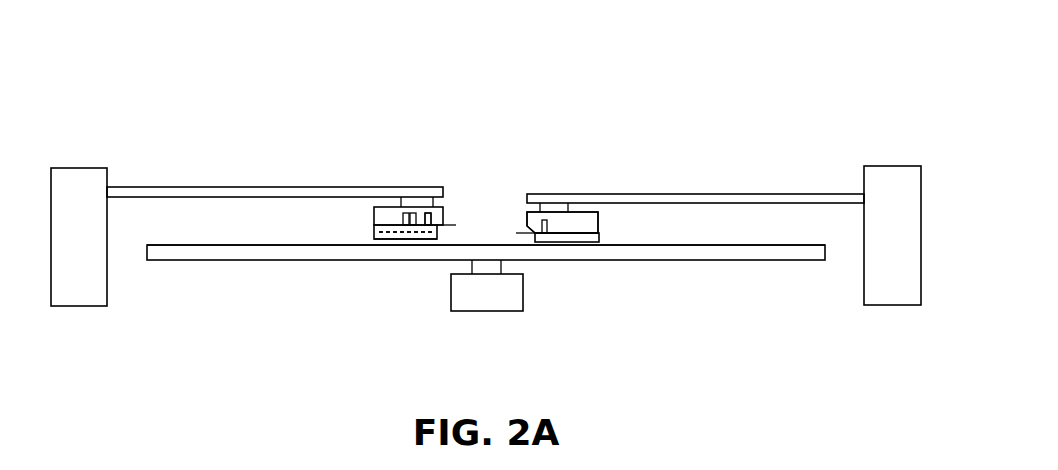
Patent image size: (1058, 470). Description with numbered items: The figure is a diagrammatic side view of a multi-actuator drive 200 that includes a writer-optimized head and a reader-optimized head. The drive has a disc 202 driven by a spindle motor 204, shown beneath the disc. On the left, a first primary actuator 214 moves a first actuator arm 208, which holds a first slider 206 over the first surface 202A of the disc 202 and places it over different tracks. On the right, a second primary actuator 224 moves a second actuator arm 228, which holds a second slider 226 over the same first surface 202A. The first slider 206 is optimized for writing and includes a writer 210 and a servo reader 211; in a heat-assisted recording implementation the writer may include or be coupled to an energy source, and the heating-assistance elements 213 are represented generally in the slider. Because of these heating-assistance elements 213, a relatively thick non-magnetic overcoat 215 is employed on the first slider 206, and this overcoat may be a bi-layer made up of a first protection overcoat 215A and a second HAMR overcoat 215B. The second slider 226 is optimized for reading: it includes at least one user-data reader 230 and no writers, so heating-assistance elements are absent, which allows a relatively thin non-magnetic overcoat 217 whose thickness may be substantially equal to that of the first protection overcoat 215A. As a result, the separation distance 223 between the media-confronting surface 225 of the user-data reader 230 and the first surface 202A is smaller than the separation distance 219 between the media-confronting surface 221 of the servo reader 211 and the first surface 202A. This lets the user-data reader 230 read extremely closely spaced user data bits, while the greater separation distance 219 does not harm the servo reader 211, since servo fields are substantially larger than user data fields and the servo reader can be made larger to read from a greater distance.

The multi-actuator drive 200 is at (757, 92).
The disc 202 is at (722, 250).
The first surface of the disc 202A is at (207, 243).
The spindle motor 204 is at (497, 297).
The first slider 206 is at (380, 208).
The first actuator arm 208 is at (229, 190).
The writer 210 is at (412, 218).
The servo reader 211 is at (432, 215).
The heating-assistance elements 213 is at (408, 218).
The first primary actuator 214 is at (75, 181).
The non-magnetic overcoat 215 is at (365, 228).
The first protection overcoat 215A is at (382, 240).
The second HAMR overcoat 215B is at (410, 237).
The non-magnetic overcoat 217 is at (603, 237).
The separation distance 219 is at (450, 235).
The media-confronting surface of servo reader 221 is at (395, 221).
The separation distance 223 is at (527, 237).
The second primary actuator 224 is at (888, 180).
The media-confronting surface of user-data reader 225 is at (578, 232).
The second slider 226 is at (595, 220).
The second actuator arm 228 is at (705, 198).
The user-data reader 230 is at (544, 220).